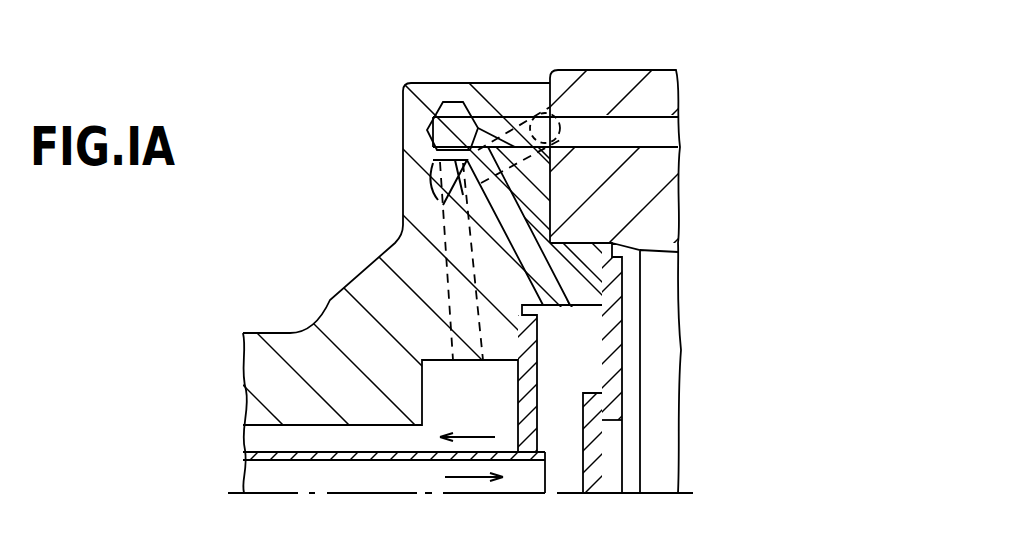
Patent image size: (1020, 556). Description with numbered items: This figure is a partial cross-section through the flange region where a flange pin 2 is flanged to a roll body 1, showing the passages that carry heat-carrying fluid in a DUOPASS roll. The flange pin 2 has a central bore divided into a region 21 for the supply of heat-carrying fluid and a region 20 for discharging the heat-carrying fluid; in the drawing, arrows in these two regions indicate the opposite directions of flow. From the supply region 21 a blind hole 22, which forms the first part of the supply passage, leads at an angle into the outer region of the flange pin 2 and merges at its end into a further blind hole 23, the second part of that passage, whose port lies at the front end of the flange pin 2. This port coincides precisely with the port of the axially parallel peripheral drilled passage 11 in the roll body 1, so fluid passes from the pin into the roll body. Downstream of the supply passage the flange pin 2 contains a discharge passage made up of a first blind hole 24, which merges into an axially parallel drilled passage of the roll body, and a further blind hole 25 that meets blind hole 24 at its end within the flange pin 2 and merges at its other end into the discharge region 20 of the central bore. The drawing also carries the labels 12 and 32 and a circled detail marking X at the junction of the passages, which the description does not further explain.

The roll body 1 is at (667, 215).
The axially parallel peripheral drilled passage 11 is at (630, 125).
The flange pin 2 is at (368, 302).
The region for discharging the heat-carrying fluid 20 is at (253, 440).
The region for the supply of heat-carrying fluid 21 is at (358, 488).
The blind hole 22 is at (480, 102).
The further blind hole 23 is at (518, 117).
The first blind hole 24 is at (450, 163).
The further blind hole 25 is at (440, 252).
The guide ring 12 is at (592, 555).
The support ring 32 is at (785, 555).
The detail region X is at (558, 112).